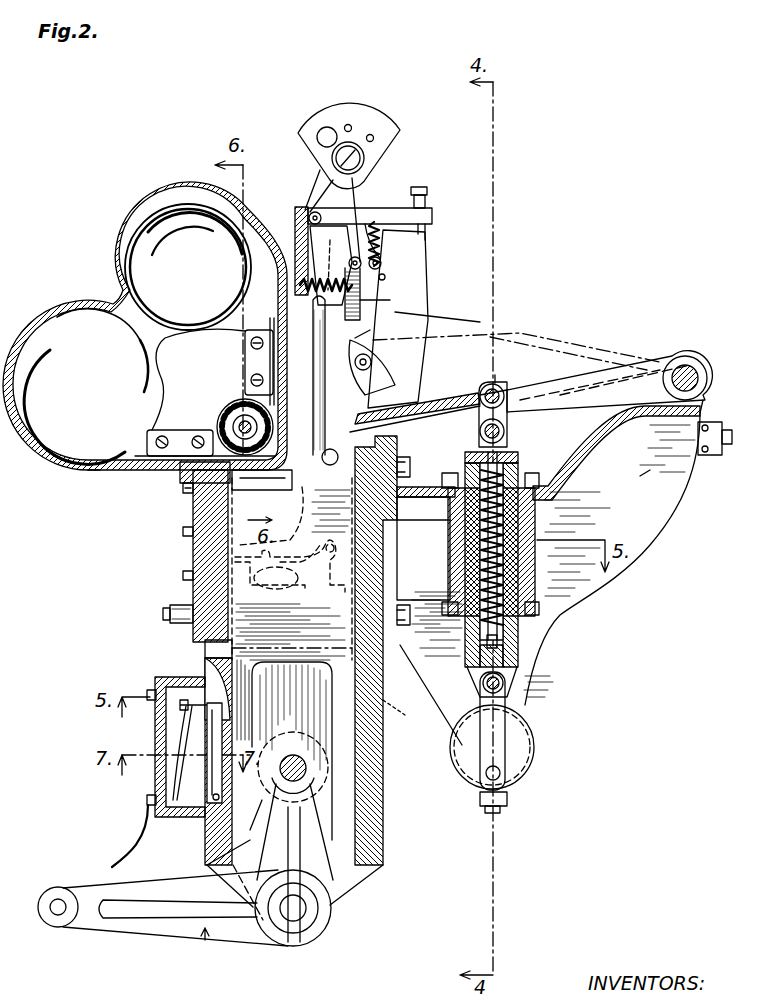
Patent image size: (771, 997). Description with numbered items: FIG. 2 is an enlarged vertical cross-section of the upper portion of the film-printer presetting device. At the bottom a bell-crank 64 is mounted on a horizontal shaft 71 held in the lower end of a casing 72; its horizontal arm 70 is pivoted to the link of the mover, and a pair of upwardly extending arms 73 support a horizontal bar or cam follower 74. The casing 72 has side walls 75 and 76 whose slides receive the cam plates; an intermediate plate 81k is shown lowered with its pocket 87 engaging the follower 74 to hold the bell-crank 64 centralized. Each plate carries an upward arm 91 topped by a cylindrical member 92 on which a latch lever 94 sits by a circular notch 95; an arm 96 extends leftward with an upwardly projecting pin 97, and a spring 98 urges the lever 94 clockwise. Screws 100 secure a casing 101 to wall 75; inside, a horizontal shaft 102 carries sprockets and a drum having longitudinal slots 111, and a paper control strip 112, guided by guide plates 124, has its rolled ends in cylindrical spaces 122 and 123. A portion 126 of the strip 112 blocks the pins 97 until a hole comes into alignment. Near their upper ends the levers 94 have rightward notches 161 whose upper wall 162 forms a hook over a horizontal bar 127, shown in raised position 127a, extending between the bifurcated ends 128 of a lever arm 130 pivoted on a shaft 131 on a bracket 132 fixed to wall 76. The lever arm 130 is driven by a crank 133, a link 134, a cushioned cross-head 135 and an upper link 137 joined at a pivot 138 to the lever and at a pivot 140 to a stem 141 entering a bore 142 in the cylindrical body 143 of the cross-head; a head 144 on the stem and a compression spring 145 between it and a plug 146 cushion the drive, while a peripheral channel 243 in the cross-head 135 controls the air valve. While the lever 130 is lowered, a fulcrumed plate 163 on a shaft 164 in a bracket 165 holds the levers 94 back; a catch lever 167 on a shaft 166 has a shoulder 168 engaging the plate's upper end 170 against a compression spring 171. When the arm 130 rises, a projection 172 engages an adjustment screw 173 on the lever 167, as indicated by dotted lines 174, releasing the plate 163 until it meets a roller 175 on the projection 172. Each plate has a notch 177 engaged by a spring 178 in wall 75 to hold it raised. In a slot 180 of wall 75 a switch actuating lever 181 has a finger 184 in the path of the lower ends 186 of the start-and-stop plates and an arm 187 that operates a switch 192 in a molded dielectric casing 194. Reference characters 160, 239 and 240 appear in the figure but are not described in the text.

The bell-crank 64 is at (205, 940).
The horizontal arm 70 is at (117, 920).
The horizontal shaft 71 is at (305, 908).
The casing 72 is at (383, 742).
The upwardly extending arms 73 is at (300, 825).
The cam follower 74 is at (308, 772).
The side wall 75 is at (193, 585).
The side wall 76 is at (383, 585).
The intermediate cam plate 81k is at (376, 704).
The pocket 87 is at (262, 790).
The arm 91 is at (383, 520).
The cylindrical member 92 is at (398, 455).
The latch lever 94 is at (247, 370).
The circular notch 95 is at (336, 361).
The arm 96 is at (254, 508).
The pin 97 is at (183, 490).
The spring 98 is at (326, 464).
The screws 100 is at (170, 612).
The casing 101 is at (60, 472).
The horizontal shaft 102 is at (225, 408).
The longitudinal slots 111 is at (185, 468).
The paper strip 112 is at (188, 192).
The cylindrical space 122 is at (150, 235).
The cylindrical space 123 is at (85, 343).
The guide plates 124 is at (248, 350).
The strip portion 126 is at (232, 475).
The horizontal bar 127 is at (398, 372).
The raised position of bar 127a is at (334, 265).
The bifurcated ends 128 is at (405, 400).
The lever arm 130 is at (575, 390).
The horizontal shaft 131 is at (688, 362).
The bracket 132 is at (648, 540).
The crank 133 is at (500, 770).
The link 134 is at (500, 723).
The cushioned cross-head 135 is at (535, 524).
The upper link 137 is at (500, 388).
The pivotal connection 138 is at (495, 383).
The pivotal connection 140 is at (507, 425).
The stem 141 is at (507, 440).
The bore 142 is at (487, 553).
The cylindrical body 143 is at (518, 630).
The head 144 is at (467, 650).
The compression spring 145 is at (482, 532).
The plug 146 is at (465, 457).
The line 160 is at (510, 330).
The rightwardly directed notches 161 is at (271, 318).
The upper wall 162 is at (392, 300).
The fulcrumed plate 163 is at (386, 278).
The horizontal shaft 164 is at (377, 222).
The bracket 165 is at (297, 207).
The shaft 166 is at (312, 212).
The catch lever 167 is at (420, 212).
The shoulder 168 is at (368, 222).
The upper end 170 is at (378, 256).
The compression spring 171 is at (300, 285).
The projection 172 is at (410, 325).
The adjustment screw 173 is at (428, 200).
The dotted lines 174 is at (426, 232).
The roller 175 is at (370, 330).
The notch 177 is at (270, 648).
The spring 178 is at (205, 648).
The slot 180 is at (212, 850).
The switch actuating lever 181 is at (213, 800).
The fingers 184 is at (262, 700).
The lower ends 186 is at (290, 725).
The outwardly projecting arm 187 is at (168, 765).
The switch 192 is at (178, 715).
The molded casing 194 is at (155, 680).
The knob 239 is at (352, 145).
The dial 240 is at (335, 112).
The peripheral channel 243 is at (540, 570).